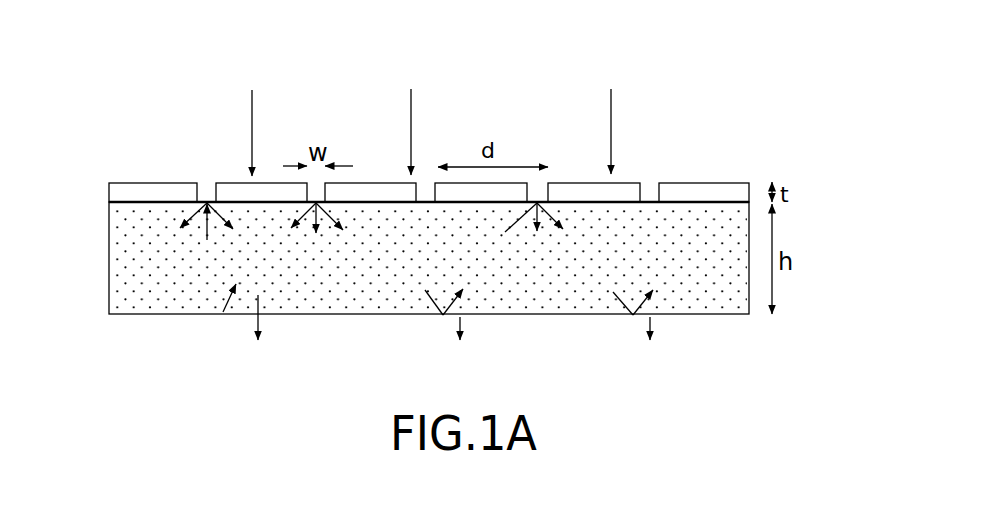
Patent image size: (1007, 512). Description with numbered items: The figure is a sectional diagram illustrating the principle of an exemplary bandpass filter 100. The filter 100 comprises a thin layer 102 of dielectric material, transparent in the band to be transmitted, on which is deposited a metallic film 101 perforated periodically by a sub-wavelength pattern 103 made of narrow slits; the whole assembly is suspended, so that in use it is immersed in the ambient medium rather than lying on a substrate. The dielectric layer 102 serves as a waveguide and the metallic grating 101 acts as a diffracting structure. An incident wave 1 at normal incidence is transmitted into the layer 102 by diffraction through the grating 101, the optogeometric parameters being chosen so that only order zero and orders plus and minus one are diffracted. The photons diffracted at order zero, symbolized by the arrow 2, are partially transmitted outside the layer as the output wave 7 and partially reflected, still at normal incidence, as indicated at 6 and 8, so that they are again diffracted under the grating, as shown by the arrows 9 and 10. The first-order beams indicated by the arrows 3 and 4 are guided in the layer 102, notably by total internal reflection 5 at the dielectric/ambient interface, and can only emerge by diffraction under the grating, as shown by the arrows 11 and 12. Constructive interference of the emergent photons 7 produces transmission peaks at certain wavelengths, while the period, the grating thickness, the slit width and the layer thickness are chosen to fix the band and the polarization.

The bandpass filter 100 is at (431, 200).
The metallic film 101 is at (738, 178).
The thin layer of dielectric material 102 is at (130, 290).
The sub-wavelength pattern 103 is at (130, 188).
The incident wave 1 is at (247, 123).
The photons diffracted at order 0 2 is at (314, 238).
The photons diffracted at order ±1 3 is at (340, 213).
The photons diffracted at order ±1 4 is at (292, 214).
The total internal reflection 5 is at (465, 292).
The reflected order 0 photons 6 is at (226, 316).
The output wave 7 is at (260, 320).
The reflected order 0 photons 8 is at (205, 236).
The re-diffracted photons 9 is at (200, 220).
The re-diffracted photons 10 is at (230, 233).
The emergent diffracted photons 11 is at (545, 225).
The emergent diffracted photons 12 is at (558, 213).